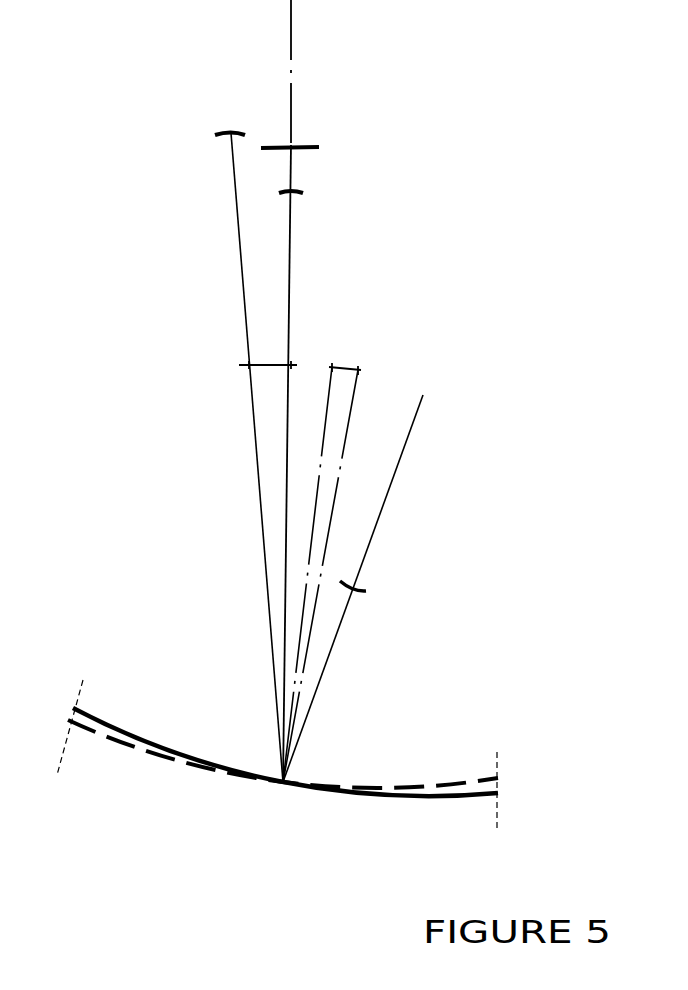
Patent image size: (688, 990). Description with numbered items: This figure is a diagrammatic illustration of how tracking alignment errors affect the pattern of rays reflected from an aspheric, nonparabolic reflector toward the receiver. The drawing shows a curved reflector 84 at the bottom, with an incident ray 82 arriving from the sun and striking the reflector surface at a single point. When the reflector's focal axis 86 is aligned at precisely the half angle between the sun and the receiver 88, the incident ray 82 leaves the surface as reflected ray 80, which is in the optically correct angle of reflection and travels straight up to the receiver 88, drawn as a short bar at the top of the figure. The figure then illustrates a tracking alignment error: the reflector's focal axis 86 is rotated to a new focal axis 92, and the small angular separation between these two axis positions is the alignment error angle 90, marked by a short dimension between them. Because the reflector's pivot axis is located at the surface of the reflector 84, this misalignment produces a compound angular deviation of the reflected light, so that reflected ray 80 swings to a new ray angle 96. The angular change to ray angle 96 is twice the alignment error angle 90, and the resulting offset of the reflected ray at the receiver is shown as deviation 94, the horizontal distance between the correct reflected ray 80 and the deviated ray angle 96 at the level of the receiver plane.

The reflected ray 80 is at (292, 240).
The incident ray 82 is at (403, 452).
The reflector 84 is at (110, 722).
The focal axis 86 is at (356, 433).
The receiver 88 is at (300, 152).
The alignment error angle 90 is at (342, 364).
The focal axis 92 is at (314, 434).
The deviation 94 is at (272, 363).
The ray angle 96 is at (239, 243).